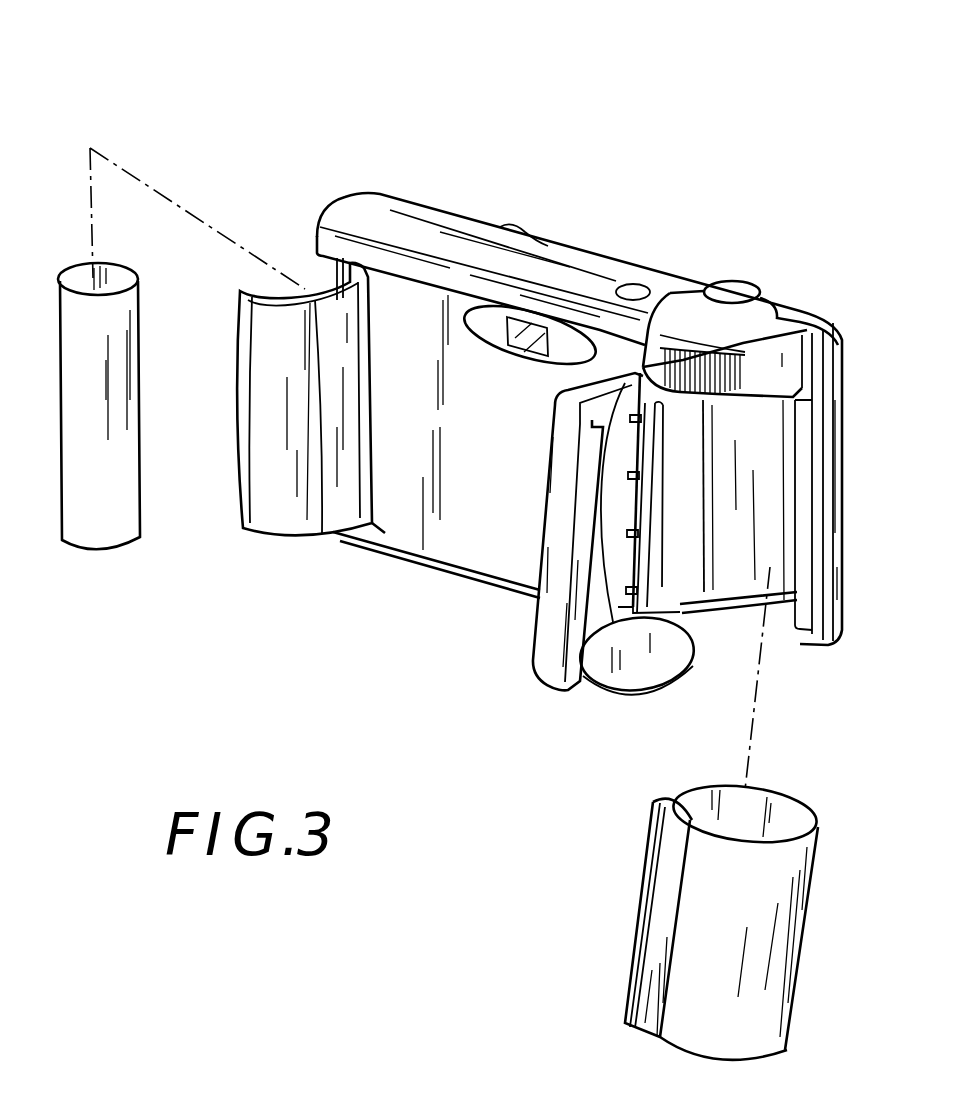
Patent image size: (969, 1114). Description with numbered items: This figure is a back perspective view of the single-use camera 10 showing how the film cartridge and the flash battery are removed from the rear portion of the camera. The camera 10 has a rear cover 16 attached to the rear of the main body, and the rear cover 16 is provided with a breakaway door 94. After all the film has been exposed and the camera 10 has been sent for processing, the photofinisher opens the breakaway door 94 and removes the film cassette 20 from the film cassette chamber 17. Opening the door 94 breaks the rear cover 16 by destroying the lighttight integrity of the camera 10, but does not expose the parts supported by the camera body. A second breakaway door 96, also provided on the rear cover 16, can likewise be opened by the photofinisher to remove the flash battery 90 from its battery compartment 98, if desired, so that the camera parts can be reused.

The camera 10 is at (333, 103).
The rear cover 16 is at (468, 546).
The film cassette chamber 17 is at (780, 498).
The film cassette 20 is at (808, 903).
The flash battery 90 is at (140, 337).
The breakaway door 94 is at (664, 700).
The second breakaway door 96 is at (283, 513).
The battery compartment 98 is at (310, 268).